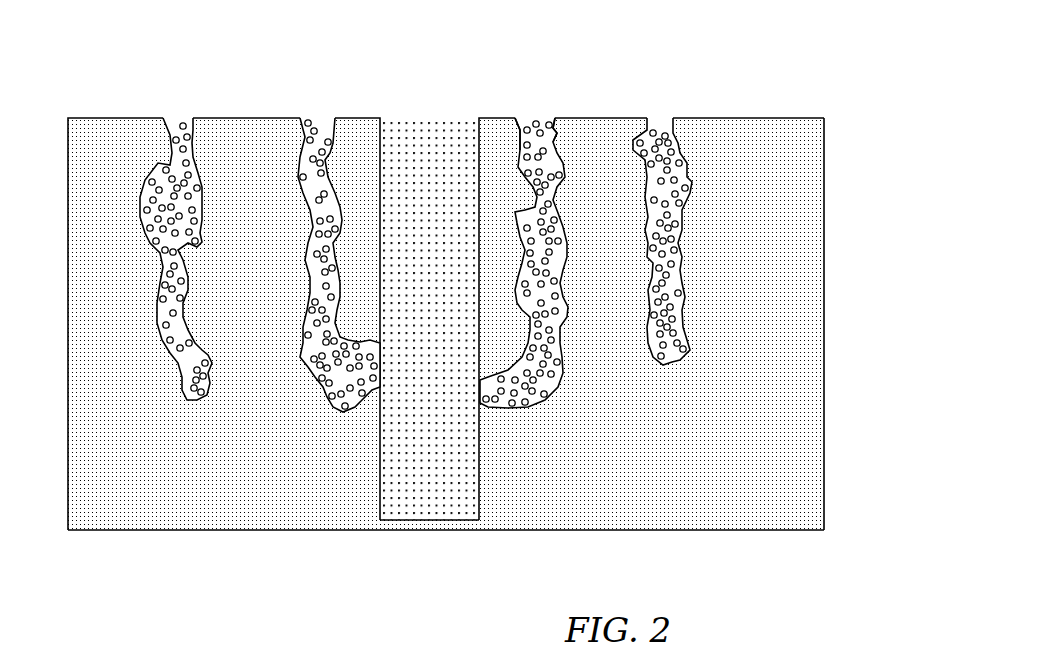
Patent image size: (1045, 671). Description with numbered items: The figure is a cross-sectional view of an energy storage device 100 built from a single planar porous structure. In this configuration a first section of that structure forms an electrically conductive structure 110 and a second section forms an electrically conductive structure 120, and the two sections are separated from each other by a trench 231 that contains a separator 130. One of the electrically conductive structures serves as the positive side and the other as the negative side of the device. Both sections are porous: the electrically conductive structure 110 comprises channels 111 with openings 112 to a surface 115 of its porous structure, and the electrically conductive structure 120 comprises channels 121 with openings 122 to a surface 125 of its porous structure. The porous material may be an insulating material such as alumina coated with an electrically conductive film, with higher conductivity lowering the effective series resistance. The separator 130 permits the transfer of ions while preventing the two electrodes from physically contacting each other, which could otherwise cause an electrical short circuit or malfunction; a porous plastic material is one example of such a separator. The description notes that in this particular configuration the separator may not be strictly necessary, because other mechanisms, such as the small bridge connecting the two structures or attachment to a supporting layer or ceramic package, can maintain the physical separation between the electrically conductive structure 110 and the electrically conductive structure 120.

The energy storage device 100 is at (846, 108).
The electrically conductive structure 110 is at (122, 490).
The channels 111 is at (317, 385).
The openings 112 is at (178, 108).
The surface 115 is at (279, 128).
The electrically conductive structure 120 is at (772, 500).
The channels 121 is at (548, 397).
The openings 122 is at (530, 108).
The surface 125 is at (724, 130).
The separator 130 is at (430, 152).
The trench 231 is at (440, 520).